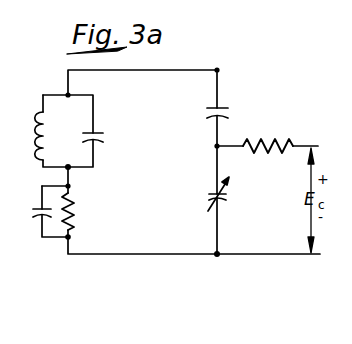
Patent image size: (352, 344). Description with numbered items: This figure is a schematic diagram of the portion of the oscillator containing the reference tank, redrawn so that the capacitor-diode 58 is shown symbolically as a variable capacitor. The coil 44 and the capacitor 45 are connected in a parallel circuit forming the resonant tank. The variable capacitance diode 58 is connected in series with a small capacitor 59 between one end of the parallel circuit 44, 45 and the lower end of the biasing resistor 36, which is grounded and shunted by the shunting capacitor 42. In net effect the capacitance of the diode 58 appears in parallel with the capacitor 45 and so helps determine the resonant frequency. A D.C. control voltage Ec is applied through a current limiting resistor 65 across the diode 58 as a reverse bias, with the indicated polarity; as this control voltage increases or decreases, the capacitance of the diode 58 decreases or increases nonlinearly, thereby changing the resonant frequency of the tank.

The coil 44 is at (38, 120).
The capacitor 45 is at (96, 133).
The small capacitor 59 is at (210, 105).
The current limiting resistor 65 is at (262, 142).
The variable capacitance diode 58 is at (208, 196).
The biasing resistor 36 is at (72, 212).
The shunting capacitor 42 is at (37, 216).